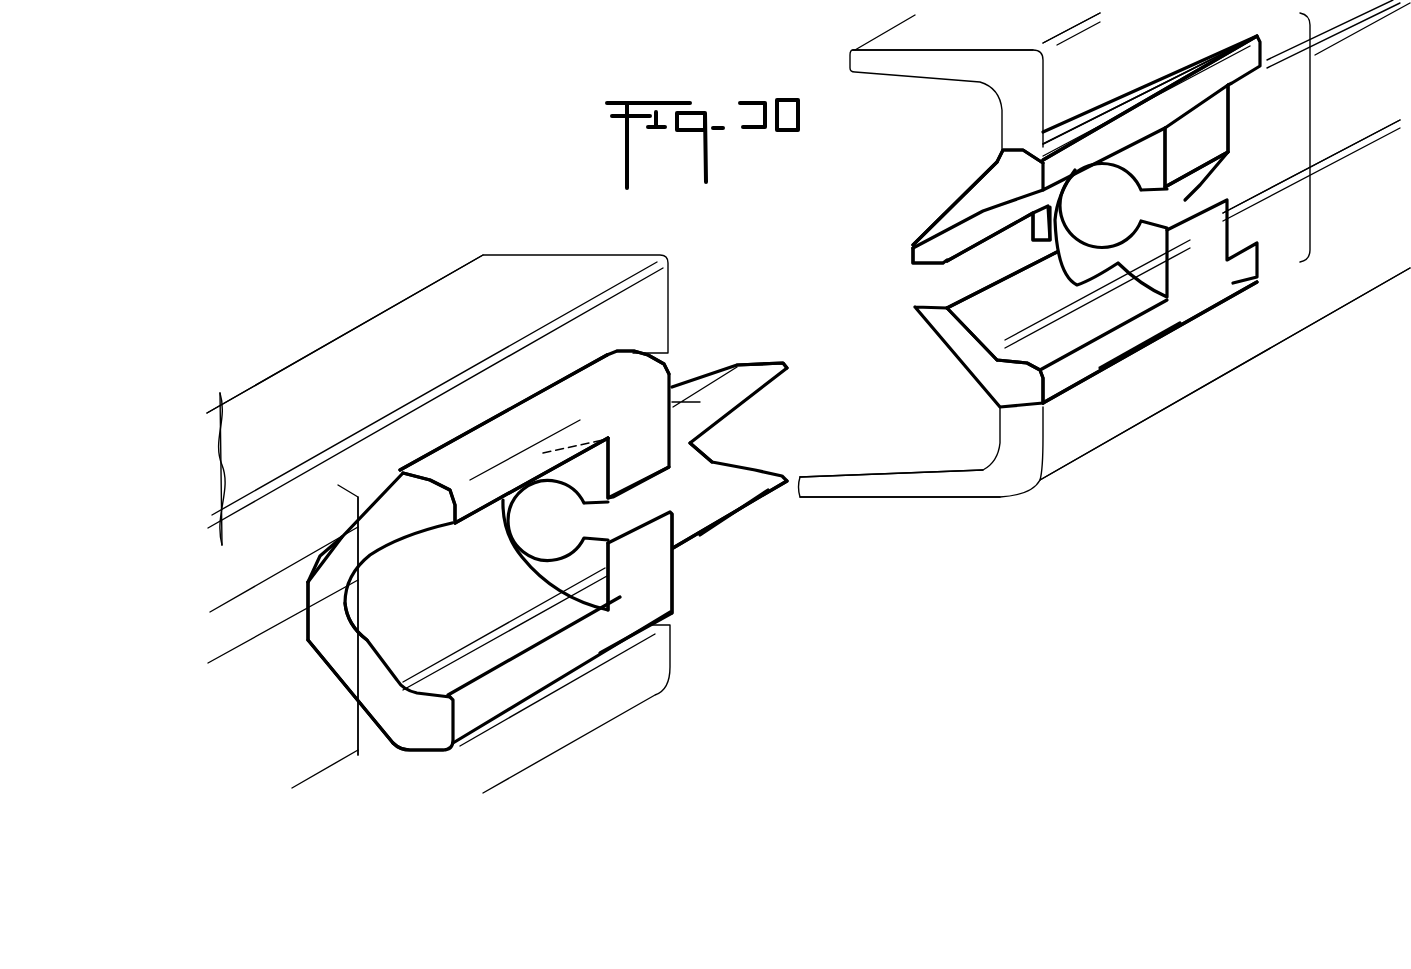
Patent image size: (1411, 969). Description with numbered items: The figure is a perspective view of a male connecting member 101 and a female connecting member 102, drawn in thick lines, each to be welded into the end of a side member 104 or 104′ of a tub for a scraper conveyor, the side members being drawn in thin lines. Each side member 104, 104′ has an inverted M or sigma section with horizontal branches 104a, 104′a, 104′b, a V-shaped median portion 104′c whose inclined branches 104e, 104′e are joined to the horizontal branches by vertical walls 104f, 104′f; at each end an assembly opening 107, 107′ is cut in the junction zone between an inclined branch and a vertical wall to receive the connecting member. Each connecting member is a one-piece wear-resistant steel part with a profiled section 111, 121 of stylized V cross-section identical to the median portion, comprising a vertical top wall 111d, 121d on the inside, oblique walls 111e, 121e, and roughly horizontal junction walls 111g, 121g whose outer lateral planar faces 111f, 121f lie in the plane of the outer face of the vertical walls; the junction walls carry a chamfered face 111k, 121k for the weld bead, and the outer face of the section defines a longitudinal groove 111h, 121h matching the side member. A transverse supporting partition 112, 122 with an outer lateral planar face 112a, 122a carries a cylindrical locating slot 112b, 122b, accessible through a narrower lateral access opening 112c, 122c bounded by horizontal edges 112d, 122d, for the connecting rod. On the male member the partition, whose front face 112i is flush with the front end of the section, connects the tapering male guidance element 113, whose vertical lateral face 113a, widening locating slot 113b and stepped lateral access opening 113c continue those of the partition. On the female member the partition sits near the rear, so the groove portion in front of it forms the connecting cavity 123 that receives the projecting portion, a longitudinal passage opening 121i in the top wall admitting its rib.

The male connecting member 101 is at (618, 622).
The female connecting member 102 is at (1143, 320).
The side member 104 is at (523, 770).
The horizontal branch 104a is at (345, 334).
The inclined branch 104e is at (300, 726).
The vertical wall 104f is at (258, 345).
The side member 104′ is at (1256, 362).
The horizontal branch 104′a is at (913, 15).
The horizontal branch 104′b is at (888, 486).
The median portion 104′c is at (1313, 128).
The inclined branch 104′e is at (1357, 184).
The vertical wall 104′f is at (1077, 53).
The assembly opening 107 is at (676, 387).
The assembly opening 107′ is at (1255, 40).
The profiled section 111 is at (403, 530).
The top wall 111d is at (318, 611).
The oblique wall 111e is at (337, 535).
The lateral planar face 111f is at (482, 470).
The junction wall 111g is at (428, 517).
The longitudinal groove 111h is at (467, 596).
The chamfered face 111k is at (527, 443).
The supporting partition 112 is at (643, 553).
The outer lateral planar face 112a is at (621, 442).
The locating slot 112b is at (588, 526).
The lateral access opening 112c is at (640, 503).
The horizontal edge 112d is at (665, 530).
The front face 112i is at (683, 381).
The male guidance element 113 is at (772, 485).
The vertical lateral face 113a is at (767, 497).
The locating slot 113b is at (690, 440).
The lateral access opening 113c is at (755, 462).
The profiled section 121 is at (1043, 123).
The top wall 121d is at (913, 258).
The oblique wall 121e is at (935, 240).
The lateral planar face 121f is at (1262, 58).
The junction wall 121g is at (1015, 174).
The longitudinal groove 121h is at (1040, 329).
The longitudinal passage opening 121i is at (975, 258).
The chamfered face 121k is at (1113, 112).
The supporting partition 122 is at (1180, 260).
The outer lateral planar face 122a is at (1223, 153).
The locating slot 122b is at (1140, 223).
The lateral access opening 122c is at (1205, 178).
The horizontal edge 122d is at (1207, 193).
The connecting cavity 123 is at (1140, 343).